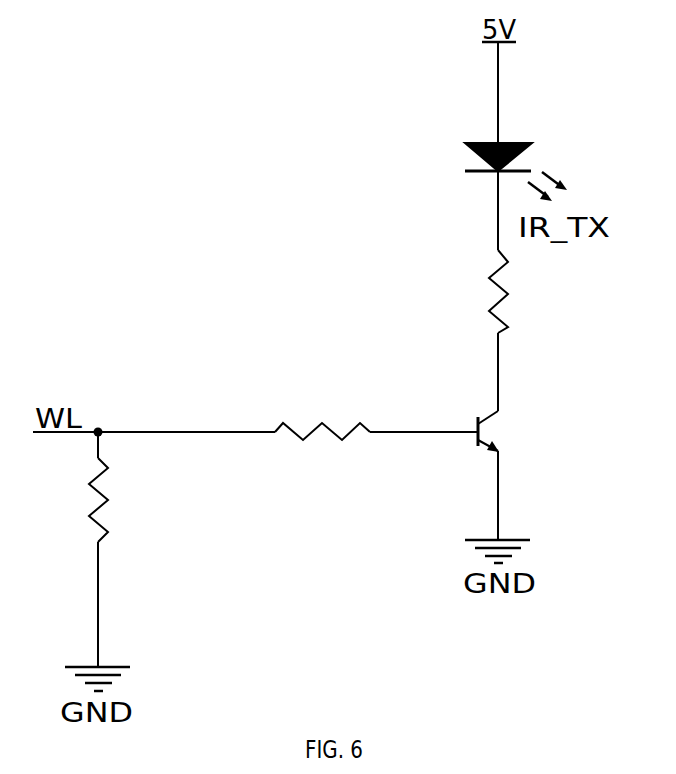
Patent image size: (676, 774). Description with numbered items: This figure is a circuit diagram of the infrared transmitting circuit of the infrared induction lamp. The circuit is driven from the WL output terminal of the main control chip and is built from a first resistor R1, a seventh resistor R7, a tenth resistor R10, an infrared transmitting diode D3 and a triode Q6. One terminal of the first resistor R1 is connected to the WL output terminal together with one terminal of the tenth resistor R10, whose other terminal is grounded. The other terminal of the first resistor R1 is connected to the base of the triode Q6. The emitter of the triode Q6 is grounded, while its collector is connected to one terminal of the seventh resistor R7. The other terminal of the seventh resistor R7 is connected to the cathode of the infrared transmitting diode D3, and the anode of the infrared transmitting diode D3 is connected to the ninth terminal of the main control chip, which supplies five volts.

The infrared transmitting diode D3 is at (516, 154).
The seventh resistor R7 is at (535, 290).
The triode Q6 is at (530, 468).
The first resistor R1 is at (321, 433).
The tenth resistor R10 is at (141, 549).